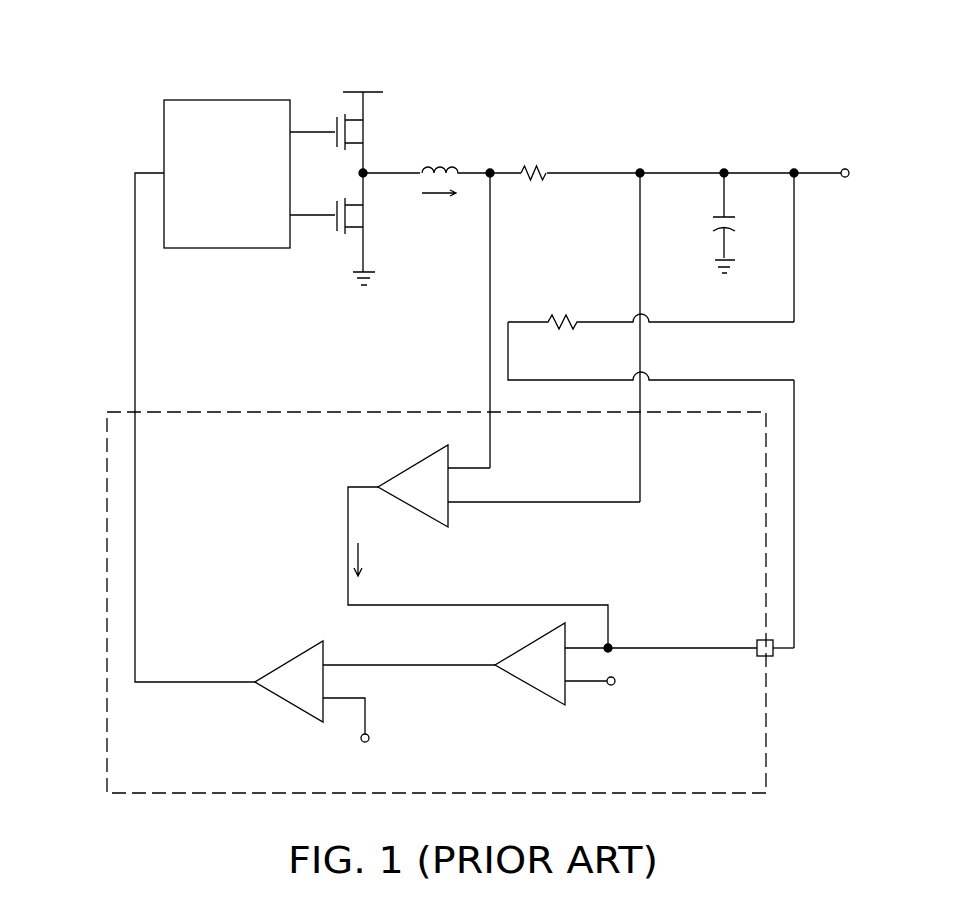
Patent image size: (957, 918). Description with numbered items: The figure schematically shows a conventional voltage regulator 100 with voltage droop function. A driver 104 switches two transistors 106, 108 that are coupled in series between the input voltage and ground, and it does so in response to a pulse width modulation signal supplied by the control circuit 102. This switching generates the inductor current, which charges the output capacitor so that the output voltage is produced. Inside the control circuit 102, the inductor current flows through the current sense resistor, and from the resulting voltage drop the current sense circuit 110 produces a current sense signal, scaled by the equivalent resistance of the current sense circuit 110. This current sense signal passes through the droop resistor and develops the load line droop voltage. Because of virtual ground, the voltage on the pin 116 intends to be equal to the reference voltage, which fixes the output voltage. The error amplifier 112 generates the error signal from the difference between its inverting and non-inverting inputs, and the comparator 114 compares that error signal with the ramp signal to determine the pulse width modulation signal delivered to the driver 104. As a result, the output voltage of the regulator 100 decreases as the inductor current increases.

The voltage regulator 100 is at (891, 116).
The control circuit 102 is at (242, 412).
The driver 104 is at (248, 100).
The transistor 106 is at (336, 102).
The transistor 108 is at (335, 246).
The current sense circuit 110 is at (412, 463).
The error amplifier 112 is at (528, 688).
The PWM comparator 114 is at (287, 660).
The pin 116 is at (757, 639).